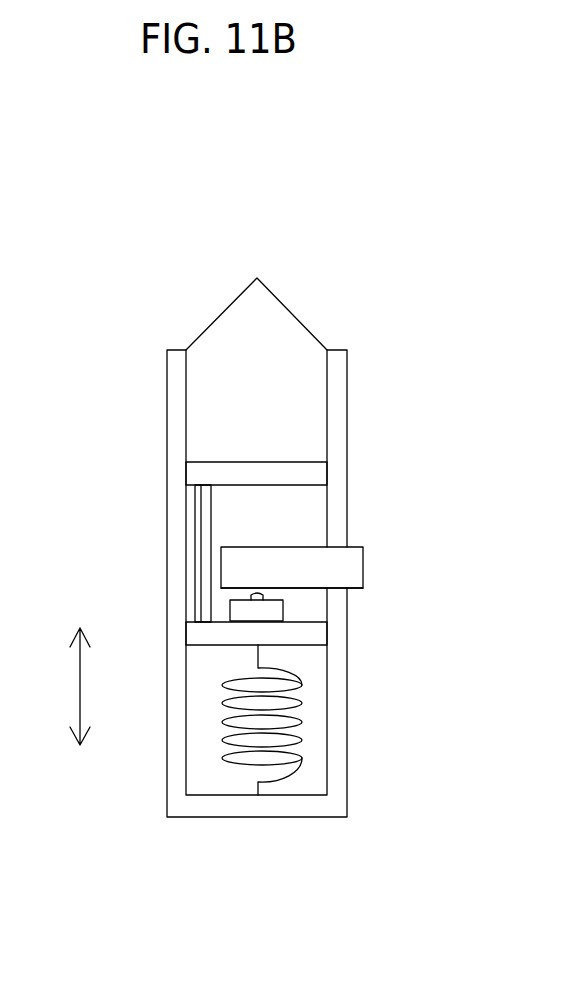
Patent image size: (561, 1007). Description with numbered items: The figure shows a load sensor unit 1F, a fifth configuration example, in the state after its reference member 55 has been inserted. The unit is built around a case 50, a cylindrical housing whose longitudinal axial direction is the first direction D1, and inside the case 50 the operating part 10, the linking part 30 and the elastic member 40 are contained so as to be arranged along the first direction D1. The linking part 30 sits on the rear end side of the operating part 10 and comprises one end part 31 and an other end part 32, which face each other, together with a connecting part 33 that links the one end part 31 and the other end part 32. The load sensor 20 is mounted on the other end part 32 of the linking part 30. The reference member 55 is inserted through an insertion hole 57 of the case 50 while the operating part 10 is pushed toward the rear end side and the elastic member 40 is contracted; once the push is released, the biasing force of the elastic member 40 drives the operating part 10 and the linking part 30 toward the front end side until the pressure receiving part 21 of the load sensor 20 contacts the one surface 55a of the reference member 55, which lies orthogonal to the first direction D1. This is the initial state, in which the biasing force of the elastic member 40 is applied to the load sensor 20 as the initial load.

The load sensor unit 1F is at (314, 198).
The operating part 10 is at (287, 332).
The case 50 is at (337, 408).
The one end part 31 is at (197, 478).
The linking part 30 is at (197, 518).
The connecting part 33 is at (205, 557).
The other end part 32 is at (203, 632).
The reference member 55 is at (357, 563).
The insertion hole 57 is at (338, 557).
The one surface 55a is at (315, 578).
The pressure receiving part 21 is at (273, 610).
The load sensor 20 is at (260, 593).
The elastic member 40 is at (300, 750).
The first direction D1 is at (78, 690).